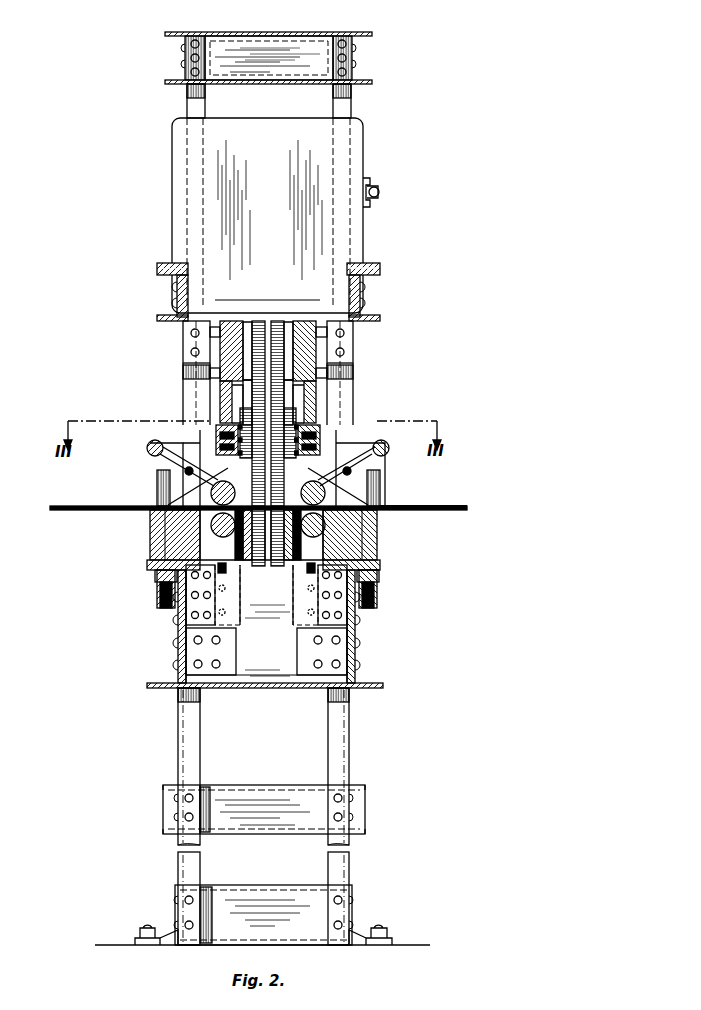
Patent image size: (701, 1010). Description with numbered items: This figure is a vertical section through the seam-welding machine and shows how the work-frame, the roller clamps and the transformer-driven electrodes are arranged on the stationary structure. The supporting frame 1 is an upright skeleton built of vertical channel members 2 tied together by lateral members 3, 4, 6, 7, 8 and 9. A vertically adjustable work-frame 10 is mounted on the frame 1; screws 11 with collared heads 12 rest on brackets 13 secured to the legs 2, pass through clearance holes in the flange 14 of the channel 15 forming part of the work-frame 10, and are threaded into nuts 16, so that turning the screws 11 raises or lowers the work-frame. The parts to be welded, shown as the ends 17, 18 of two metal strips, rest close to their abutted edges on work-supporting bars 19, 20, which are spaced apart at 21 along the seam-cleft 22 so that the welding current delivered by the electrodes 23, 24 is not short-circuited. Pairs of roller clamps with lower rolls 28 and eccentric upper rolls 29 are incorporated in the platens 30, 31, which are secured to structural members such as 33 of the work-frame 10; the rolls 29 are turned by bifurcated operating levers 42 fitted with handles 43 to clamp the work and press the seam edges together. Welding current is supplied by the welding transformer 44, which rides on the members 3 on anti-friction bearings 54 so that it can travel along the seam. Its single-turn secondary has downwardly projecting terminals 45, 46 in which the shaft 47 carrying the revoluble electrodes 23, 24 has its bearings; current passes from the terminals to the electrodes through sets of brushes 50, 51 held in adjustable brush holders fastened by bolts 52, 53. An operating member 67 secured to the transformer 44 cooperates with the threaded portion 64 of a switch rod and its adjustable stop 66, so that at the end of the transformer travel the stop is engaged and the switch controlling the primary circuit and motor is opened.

The supporting frame 1 is at (349, 740).
The vertical channel members 2 is at (178, 735).
The lateral members 3 is at (177, 290).
The lateral members 4 is at (165, 34).
The lateral members 6 is at (276, 36).
The lateral members 7 is at (288, 888).
The lateral members 8 is at (163, 832).
The lateral members 9 is at (270, 834).
The work-frame 10 is at (150, 550).
The screws 11 is at (157, 482).
The collared heads 12 is at (150, 443).
The brackets 13 is at (160, 454).
The flange 14 is at (147, 566).
The channel 15 is at (178, 652).
The nuts 16 is at (157, 580).
The end of metal strip 17 is at (56, 506).
The end of metal strip 18 is at (467, 506).
The work-supporting bar 19 is at (252, 455).
The work-supporting bar 20 is at (284, 455).
The space between work-supporting bars 21 is at (272, 566).
The seam-cleft 22 is at (320, 445).
The electrode 23 is at (243, 385).
The electrode 24 is at (293, 385).
The rolls 28 is at (150, 518).
The rolls 29 is at (211, 493).
The platen 30 is at (150, 535).
The platen 31 is at (377, 548).
The structural member 33 is at (268, 632).
The bifurcated operating levers 42 is at (185, 471).
The handles 43 is at (147, 448).
The welding transformer 44 is at (267, 215).
The secondary terminal 45 is at (220, 345).
The secondary terminal 46 is at (316, 347).
The shaft 47 is at (235, 430).
The brushes 50 is at (293, 352).
The brushes 51 is at (243, 352).
The bolts 52 is at (210, 335).
The bolts 53 is at (210, 373).
The anti-friction bearings 54 is at (157, 268).
The threaded portion 64 is at (378, 196).
The stop 66 is at (379, 191).
The operating member 67 is at (370, 180).